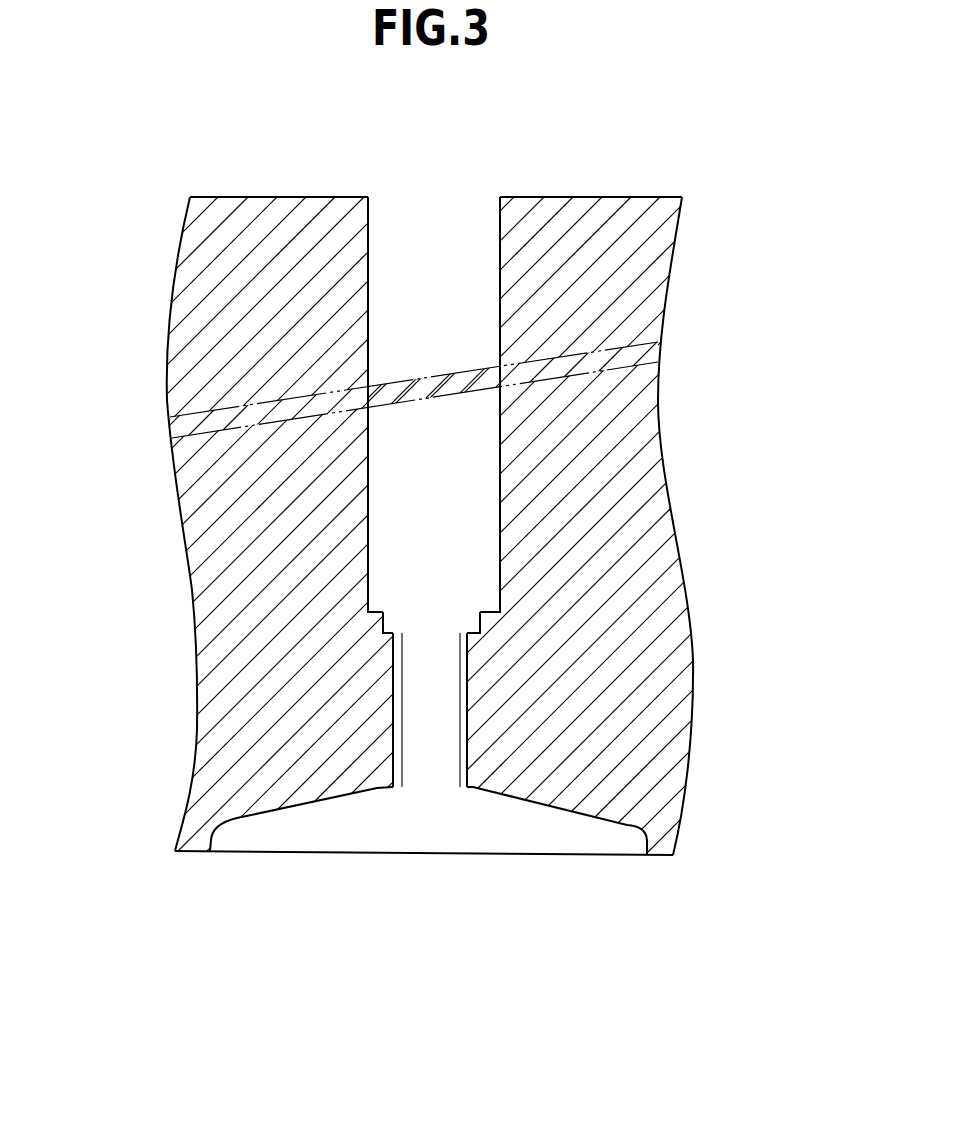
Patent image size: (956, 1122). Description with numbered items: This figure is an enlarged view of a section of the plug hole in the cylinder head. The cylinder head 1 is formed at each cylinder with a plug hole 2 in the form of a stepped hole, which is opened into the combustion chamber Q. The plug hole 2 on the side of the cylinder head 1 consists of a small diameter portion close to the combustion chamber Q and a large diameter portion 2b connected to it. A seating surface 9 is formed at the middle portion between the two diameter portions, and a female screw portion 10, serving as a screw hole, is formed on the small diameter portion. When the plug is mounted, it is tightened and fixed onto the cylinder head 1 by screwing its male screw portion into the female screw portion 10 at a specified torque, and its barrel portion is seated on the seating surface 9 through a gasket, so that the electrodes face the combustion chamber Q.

The cylinder head 1 is at (734, 563).
The plug hole 2 is at (415, 492).
The large diameter portion 2b is at (503, 460).
The seating surface 9 is at (432, 633).
The female screw portion 10 is at (398, 733).
The combustion chamber Q is at (342, 837).